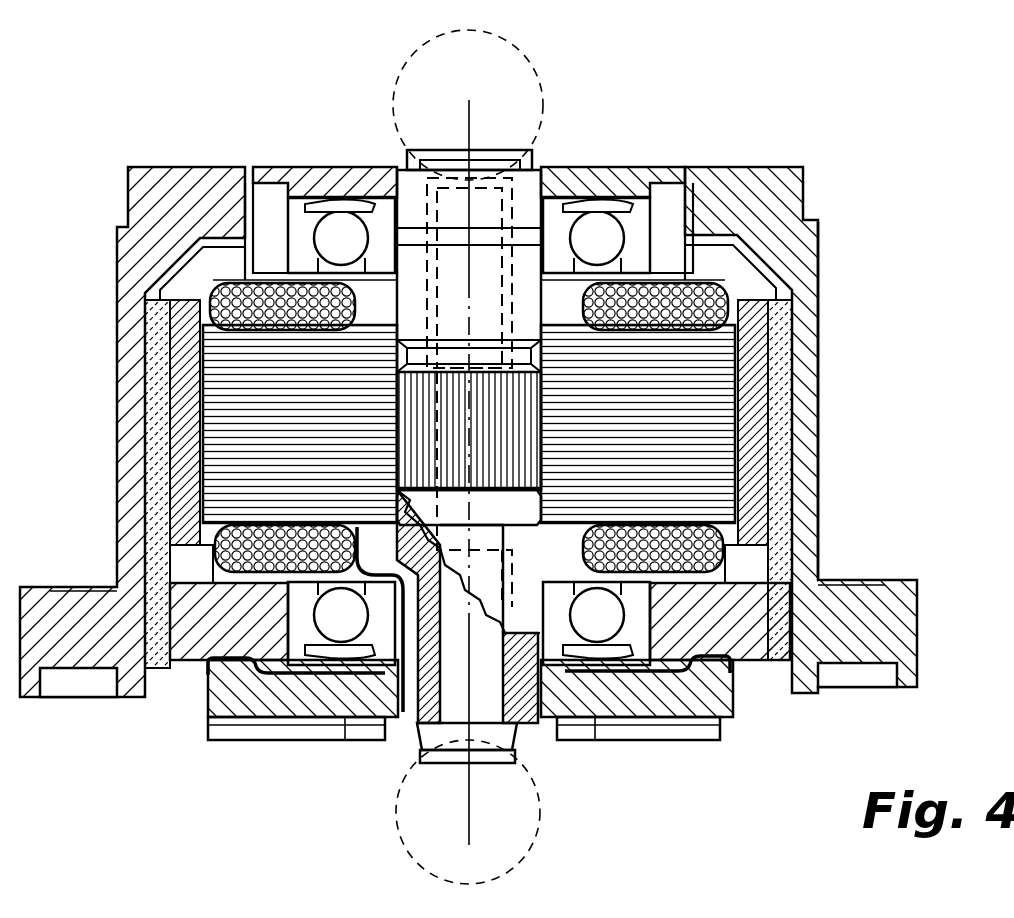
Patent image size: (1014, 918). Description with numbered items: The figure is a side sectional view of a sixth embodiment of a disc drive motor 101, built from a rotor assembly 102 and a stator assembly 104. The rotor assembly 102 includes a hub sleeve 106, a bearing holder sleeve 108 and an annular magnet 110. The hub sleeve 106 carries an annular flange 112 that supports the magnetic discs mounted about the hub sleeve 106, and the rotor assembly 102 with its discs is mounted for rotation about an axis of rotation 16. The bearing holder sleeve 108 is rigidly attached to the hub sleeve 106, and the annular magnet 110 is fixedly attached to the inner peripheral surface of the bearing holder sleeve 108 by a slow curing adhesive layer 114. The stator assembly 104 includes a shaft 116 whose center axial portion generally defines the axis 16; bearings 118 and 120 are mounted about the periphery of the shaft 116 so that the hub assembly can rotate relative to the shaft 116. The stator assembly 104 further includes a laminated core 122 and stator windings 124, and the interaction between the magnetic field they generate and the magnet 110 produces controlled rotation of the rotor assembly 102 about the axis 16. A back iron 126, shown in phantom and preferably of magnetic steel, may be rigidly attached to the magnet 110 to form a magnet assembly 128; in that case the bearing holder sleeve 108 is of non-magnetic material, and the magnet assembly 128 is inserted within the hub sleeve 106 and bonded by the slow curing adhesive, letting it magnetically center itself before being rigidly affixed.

The axis of rotation 16 is at (470, 117).
The motor 101 is at (86, 242).
The rotor assembly 102 is at (816, 283).
The stator assembly 104 is at (214, 590).
The hub sleeve 106 is at (818, 410).
The bearing holder sleeve 108 is at (790, 492).
The annular magnet 110 is at (747, 357).
The annular flange 112 is at (917, 620).
The slow curing adhesive layer 114 is at (777, 505).
The shaft 116 is at (523, 703).
The bearing 118 is at (640, 213).
The bearing 120 is at (643, 640).
The laminated core 122 is at (245, 465).
The stator windings 124 is at (270, 307).
The back iron 126 is at (145, 570).
The magnet assembly 128 is at (138, 354).